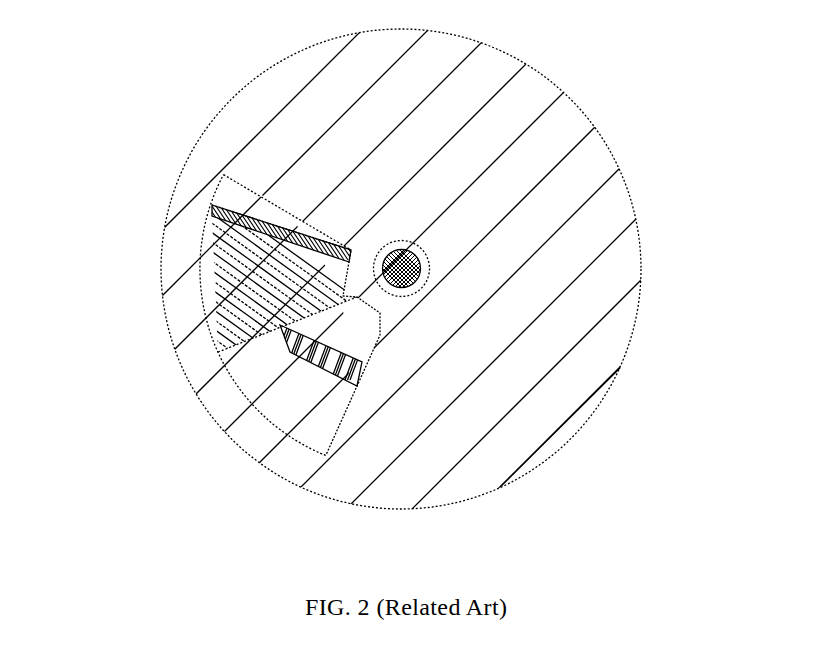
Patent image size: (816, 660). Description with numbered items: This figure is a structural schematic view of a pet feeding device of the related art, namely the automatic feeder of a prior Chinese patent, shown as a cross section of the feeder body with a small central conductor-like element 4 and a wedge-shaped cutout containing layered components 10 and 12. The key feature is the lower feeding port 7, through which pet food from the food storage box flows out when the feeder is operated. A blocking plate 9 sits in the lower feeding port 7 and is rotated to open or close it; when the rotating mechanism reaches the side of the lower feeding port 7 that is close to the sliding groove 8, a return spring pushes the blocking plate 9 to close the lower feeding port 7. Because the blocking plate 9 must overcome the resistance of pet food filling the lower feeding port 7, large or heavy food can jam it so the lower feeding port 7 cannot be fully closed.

The conductor 4 is at (412, 262).
The lower feeding port 7 is at (200, 297).
The sliding groove 8 is at (258, 370).
The blocking plate 9 is at (250, 264).
The shield band 10 is at (212, 205).
The spring member 12 is at (305, 370).